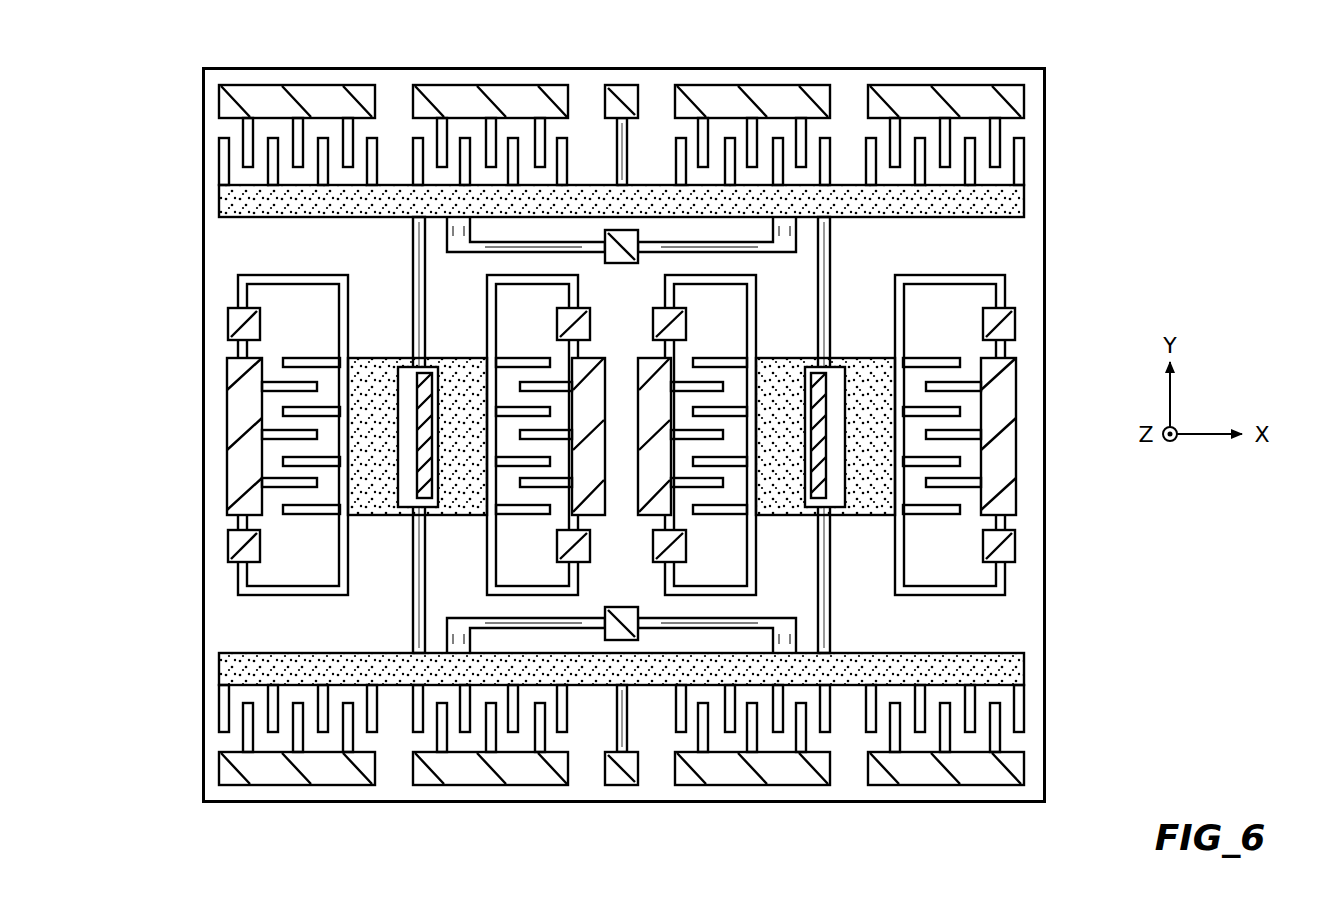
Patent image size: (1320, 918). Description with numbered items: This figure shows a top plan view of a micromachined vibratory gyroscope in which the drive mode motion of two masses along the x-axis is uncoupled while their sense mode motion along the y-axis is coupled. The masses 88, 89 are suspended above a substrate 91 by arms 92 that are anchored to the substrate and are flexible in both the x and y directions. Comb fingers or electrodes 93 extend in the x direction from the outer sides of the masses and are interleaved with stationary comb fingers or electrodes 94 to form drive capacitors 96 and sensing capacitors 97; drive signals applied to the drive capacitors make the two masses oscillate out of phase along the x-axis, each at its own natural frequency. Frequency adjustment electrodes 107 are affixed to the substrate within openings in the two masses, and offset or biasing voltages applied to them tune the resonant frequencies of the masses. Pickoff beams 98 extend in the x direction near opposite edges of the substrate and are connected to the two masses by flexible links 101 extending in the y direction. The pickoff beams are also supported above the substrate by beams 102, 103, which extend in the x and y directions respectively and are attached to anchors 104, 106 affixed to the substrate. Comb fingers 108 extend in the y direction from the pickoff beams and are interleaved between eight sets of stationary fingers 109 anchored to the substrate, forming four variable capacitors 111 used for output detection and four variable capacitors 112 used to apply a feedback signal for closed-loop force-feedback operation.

The mass 88 is at (374, 392).
The mass 89 is at (869, 392).
The substrate 91 is at (631, 346).
The arms 92 is at (238, 289).
The comb fingers 93 is at (532, 360).
The stationary comb fingers 94 is at (283, 382).
The drive capacitors 96 is at (262, 411).
The sensing capacitors 97 is at (676, 459).
The pickoff beams 98 is at (311, 217).
The flexible links 101 is at (413, 244).
The beams 102 is at (497, 251).
The beams 103 is at (615, 150).
The anchors 104 is at (623, 264).
The anchors 106 is at (630, 92).
The frequency adjustment electrodes 107 is at (421, 470).
The comb fingers 108 is at (219, 162).
The stationary fingers 109 is at (245, 131).
The variable capacitors 111 is at (322, 116).
The variable capacitors 112 is at (467, 118).